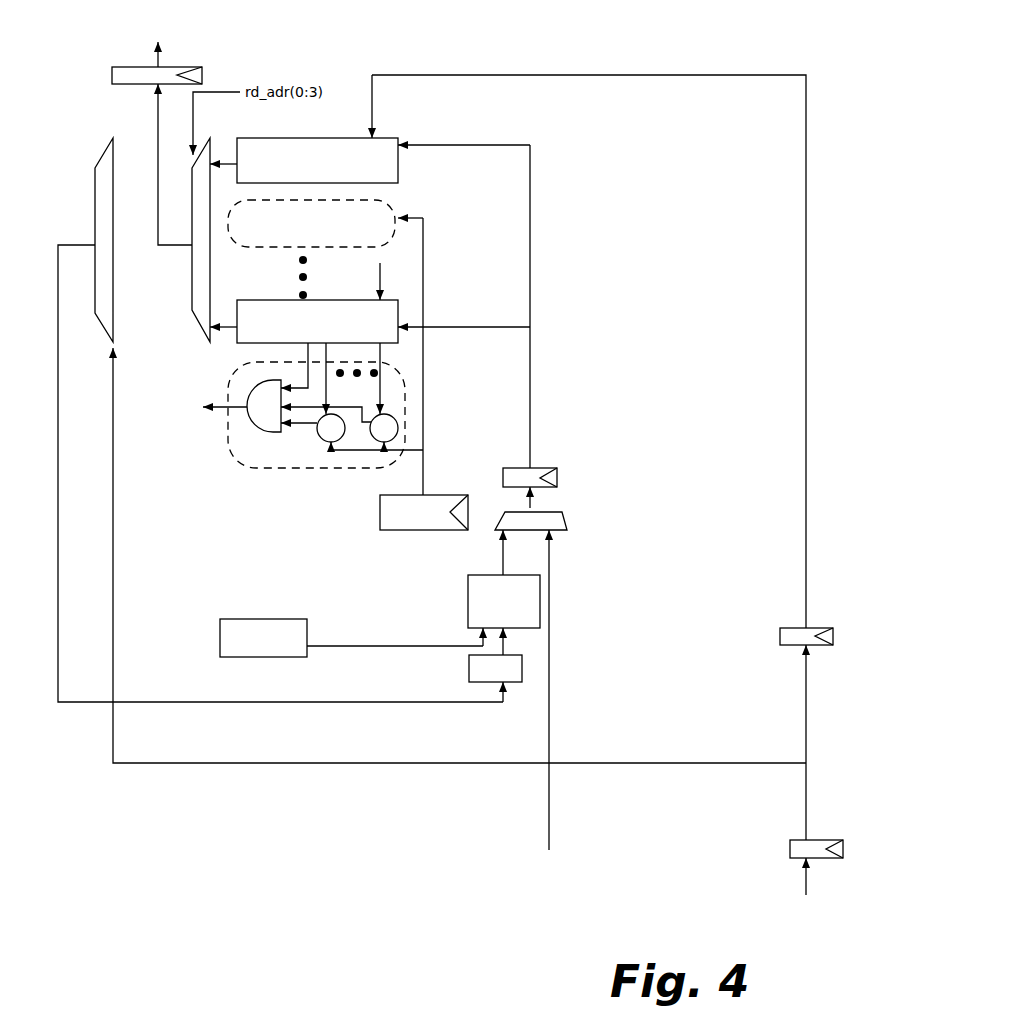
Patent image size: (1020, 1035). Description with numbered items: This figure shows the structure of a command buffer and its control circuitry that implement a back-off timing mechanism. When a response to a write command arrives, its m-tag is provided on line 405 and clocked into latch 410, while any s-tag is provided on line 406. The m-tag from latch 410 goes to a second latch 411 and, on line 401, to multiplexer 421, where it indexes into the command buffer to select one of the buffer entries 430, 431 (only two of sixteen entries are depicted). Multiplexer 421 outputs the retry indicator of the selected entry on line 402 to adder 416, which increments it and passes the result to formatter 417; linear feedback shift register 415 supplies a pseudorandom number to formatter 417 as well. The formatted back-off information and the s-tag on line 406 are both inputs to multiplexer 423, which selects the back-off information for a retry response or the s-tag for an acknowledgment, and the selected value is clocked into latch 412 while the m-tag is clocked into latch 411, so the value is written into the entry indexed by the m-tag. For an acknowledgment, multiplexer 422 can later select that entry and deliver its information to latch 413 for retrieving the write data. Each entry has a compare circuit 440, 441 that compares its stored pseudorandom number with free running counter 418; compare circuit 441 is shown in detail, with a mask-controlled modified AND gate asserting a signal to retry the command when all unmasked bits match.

The line 401 is at (318, 766).
The line 402 is at (58, 632).
The line 405 is at (806, 882).
The line 406 is at (549, 808).
The latch 410 is at (823, 838).
The second latch 411 is at (815, 627).
The latch 412 is at (545, 467).
The latch 413 is at (185, 67).
The linear feedback shift register 415 is at (262, 619).
The adder 416 is at (469, 668).
The formatter 417 is at (468, 590).
The free running counter 418 is at (384, 530).
The multiplexer 421 is at (100, 158).
The multiplexer 422 is at (194, 306).
The multiplexer 423 is at (565, 530).
The buffer entry 430 is at (398, 172).
The buffer entry 431 is at (398, 310).
The compare circuit 440 is at (396, 206).
The compare circuit 441 is at (398, 368).